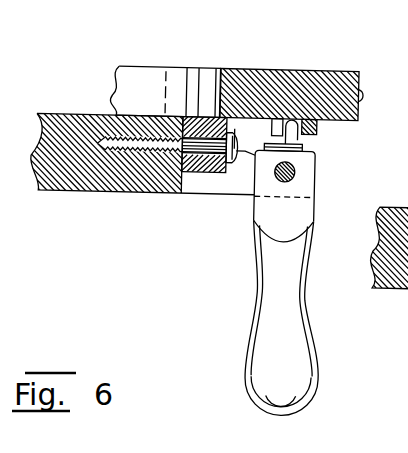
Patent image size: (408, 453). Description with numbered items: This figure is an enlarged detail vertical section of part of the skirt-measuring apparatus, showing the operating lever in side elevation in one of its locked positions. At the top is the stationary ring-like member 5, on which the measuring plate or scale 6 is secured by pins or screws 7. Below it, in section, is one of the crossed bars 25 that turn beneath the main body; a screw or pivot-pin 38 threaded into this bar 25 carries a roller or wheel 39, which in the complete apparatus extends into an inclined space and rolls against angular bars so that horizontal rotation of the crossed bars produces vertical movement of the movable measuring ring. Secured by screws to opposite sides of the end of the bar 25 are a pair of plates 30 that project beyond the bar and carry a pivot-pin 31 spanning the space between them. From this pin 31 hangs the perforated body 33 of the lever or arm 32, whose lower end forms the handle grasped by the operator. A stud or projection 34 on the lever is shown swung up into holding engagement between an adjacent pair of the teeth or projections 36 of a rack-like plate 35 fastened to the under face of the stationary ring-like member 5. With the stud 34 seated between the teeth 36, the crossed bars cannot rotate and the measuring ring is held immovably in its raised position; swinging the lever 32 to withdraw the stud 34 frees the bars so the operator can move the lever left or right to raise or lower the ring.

The stationary ring-like member 5 is at (239, 69).
The measuring plate 6 is at (357, 69).
The pins or screws 7 is at (361, 90).
The crossed bar 25 is at (74, 181).
The plates 30 is at (239, 184).
The pivot-pin 31 is at (298, 168).
The lever or arm 32 is at (286, 371).
The perforated body 33 is at (302, 203).
The stud or projection 34 is at (293, 118).
The rack-like plate 35 is at (317, 125).
The teeth or projections 36 is at (277, 119).
The screws or pivot-pins 38 is at (154, 156).
The roller or wheel 39 is at (203, 173).